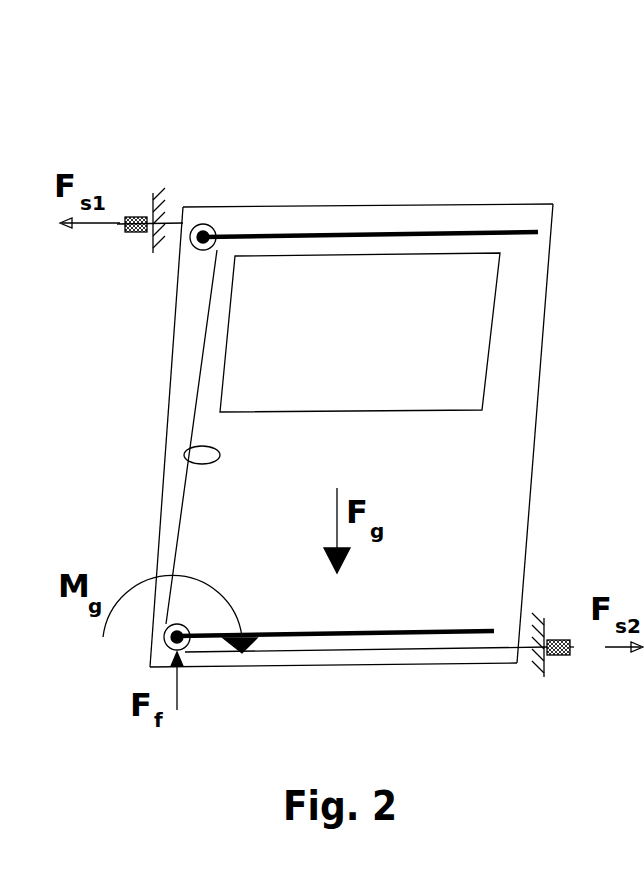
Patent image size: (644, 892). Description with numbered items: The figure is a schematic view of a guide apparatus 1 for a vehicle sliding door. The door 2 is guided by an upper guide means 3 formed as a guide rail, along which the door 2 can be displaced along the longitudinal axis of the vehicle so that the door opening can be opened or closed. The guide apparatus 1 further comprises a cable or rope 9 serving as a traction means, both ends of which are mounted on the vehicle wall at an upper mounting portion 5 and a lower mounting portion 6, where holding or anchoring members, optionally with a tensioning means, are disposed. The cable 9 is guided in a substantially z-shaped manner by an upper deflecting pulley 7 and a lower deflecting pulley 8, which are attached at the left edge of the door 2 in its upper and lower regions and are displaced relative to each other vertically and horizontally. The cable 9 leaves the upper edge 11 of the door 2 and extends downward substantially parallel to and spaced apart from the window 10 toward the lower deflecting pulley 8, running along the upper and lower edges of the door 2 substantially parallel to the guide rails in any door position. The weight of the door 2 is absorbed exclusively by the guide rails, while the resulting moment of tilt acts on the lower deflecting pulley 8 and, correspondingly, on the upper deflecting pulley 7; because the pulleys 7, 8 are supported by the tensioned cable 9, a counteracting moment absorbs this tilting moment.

The guide apparatus 1 is at (392, 362).
The door 2 is at (525, 458).
The upper guide means 3 is at (353, 237).
The upper mounting portion 5 is at (150, 222).
The lower mounting portion 6 is at (547, 655).
The upper deflecting pulley 7 is at (191, 249).
The lower deflecting pulley 8 is at (165, 643).
The cable or rope 9 is at (200, 507).
The window 10 is at (480, 317).
The upper edge 11 is at (498, 212).